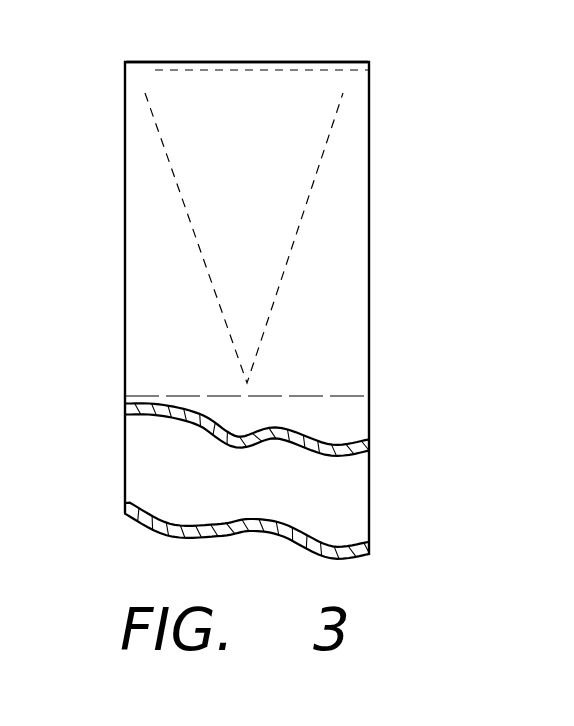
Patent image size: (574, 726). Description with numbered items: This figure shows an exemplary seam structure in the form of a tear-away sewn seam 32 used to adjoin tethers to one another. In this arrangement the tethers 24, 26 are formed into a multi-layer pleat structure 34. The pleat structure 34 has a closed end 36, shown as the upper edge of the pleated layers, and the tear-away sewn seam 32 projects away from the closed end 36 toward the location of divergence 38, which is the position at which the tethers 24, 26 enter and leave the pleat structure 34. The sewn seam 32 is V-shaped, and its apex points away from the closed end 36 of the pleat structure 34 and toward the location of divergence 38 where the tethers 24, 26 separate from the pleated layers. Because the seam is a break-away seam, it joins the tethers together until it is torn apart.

The multi-layer pleat structure 34 is at (372, 138).
The closed end 36 is at (315, 62).
The tear-away sewn seam 32 is at (312, 190).
The location of divergence 38 is at (347, 393).
The tether 24 is at (353, 422).
The tether 26 is at (353, 502).